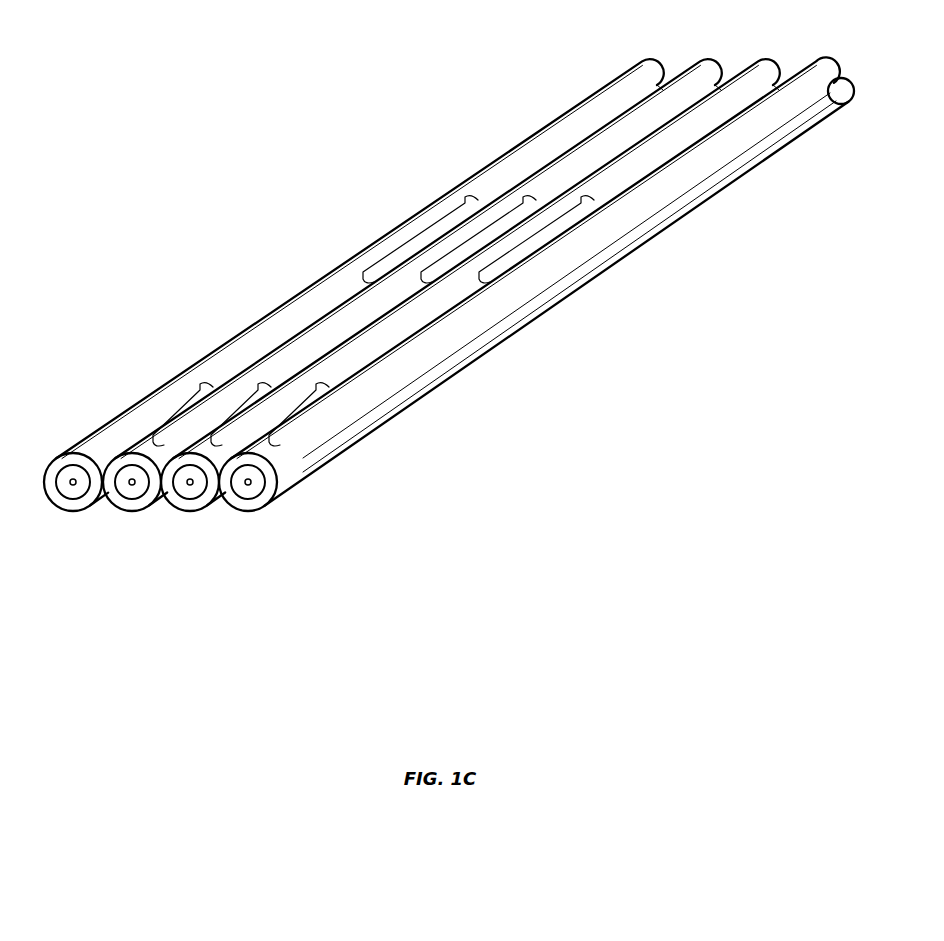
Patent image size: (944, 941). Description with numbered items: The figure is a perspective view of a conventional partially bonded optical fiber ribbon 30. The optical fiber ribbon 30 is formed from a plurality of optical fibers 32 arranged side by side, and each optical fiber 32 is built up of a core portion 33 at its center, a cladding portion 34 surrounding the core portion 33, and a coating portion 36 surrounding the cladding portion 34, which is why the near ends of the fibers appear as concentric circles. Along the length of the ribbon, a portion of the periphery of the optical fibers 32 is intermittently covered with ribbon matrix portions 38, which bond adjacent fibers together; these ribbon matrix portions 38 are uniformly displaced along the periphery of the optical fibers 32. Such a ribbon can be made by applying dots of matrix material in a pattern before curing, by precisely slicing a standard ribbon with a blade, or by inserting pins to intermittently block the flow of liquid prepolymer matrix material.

The optical fiber ribbon 30 is at (295, 133).
The optical fiber 32 is at (645, 58).
The core portion 33 is at (71, 488).
The cladding portion 34 is at (58, 489).
The coating portion 36 is at (74, 511).
The ribbon matrix portion 38 is at (517, 250).